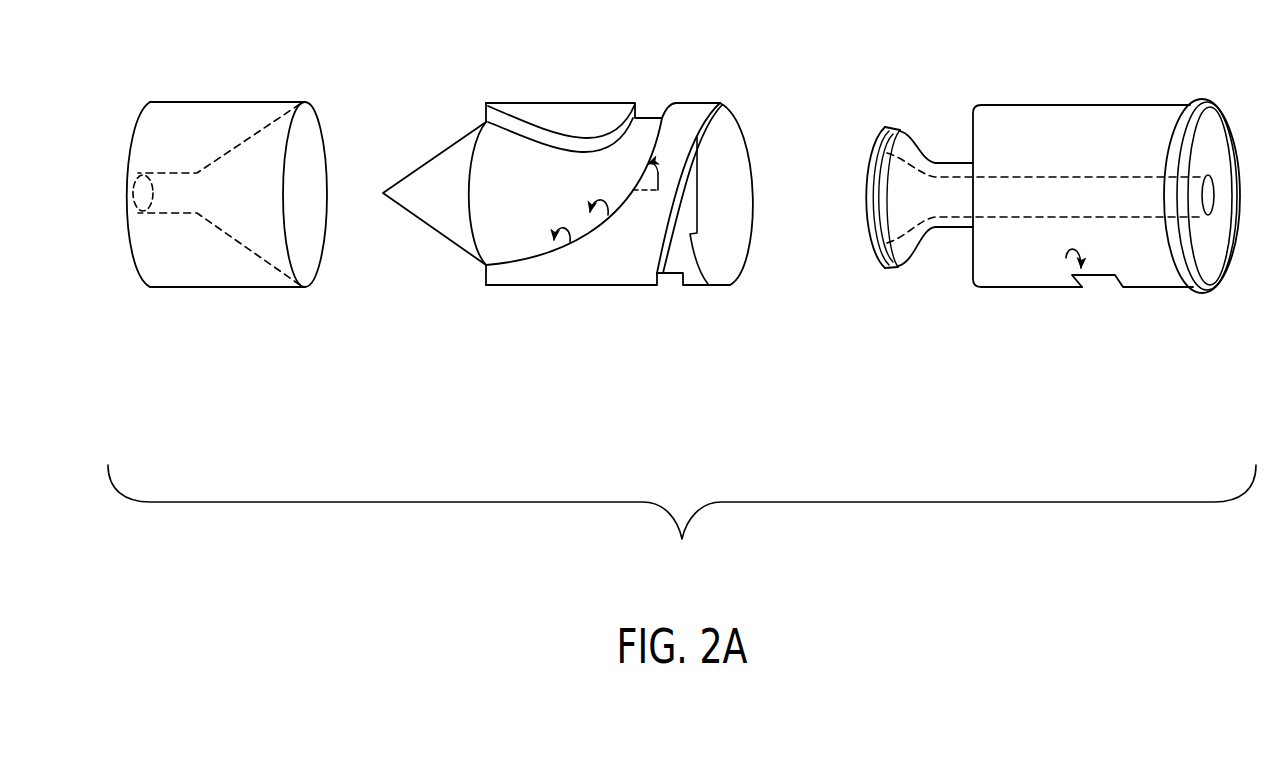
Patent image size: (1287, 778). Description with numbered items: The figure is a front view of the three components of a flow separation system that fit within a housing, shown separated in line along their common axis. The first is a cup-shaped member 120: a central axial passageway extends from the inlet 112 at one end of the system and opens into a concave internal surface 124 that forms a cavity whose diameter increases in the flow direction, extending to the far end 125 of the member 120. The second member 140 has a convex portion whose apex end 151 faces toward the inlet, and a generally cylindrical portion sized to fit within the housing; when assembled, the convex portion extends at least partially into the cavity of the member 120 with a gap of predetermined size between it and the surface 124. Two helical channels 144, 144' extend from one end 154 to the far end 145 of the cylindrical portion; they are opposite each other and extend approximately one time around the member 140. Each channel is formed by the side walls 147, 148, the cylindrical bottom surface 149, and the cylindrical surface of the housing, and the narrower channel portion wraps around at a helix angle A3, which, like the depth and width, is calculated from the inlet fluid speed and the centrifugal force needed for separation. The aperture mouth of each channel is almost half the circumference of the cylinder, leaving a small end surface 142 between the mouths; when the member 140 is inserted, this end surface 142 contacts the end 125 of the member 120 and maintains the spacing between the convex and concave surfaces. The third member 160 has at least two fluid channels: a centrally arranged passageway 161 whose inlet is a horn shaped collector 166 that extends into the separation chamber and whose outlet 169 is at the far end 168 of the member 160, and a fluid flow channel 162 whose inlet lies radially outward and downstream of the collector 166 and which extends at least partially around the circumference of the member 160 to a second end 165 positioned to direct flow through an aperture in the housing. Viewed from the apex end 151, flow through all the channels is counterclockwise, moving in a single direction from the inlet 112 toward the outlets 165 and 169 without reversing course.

The inlet 112 is at (130, 195).
The cup-shaped member 120 is at (217, 219).
The concave internal surface 124 is at (301, 155).
The far end 125 is at (306, 102).
The second member 140 is at (587, 215).
The end surface 142 is at (485, 113).
The helical channel 144 is at (689, 153).
The helical channel 144' is at (661, 314).
The far end 145 is at (721, 148).
The side wall 147 is at (634, 104).
The side wall 148 is at (570, 242).
The cylindrical bottom surface 149 is at (608, 215).
The apex end 151 is at (384, 192).
The one end 154 is at (487, 103).
The helix angle A3 is at (654, 161).
The member 160 is at (1045, 277).
The centrally arranged passageway 161 is at (943, 187).
The fluid flow channel 162 is at (1097, 282).
The second end 165 is at (1066, 258).
The horn shaped collector 166 is at (874, 141).
The far end 168 is at (1210, 252).
The outlet 169 is at (1212, 190).